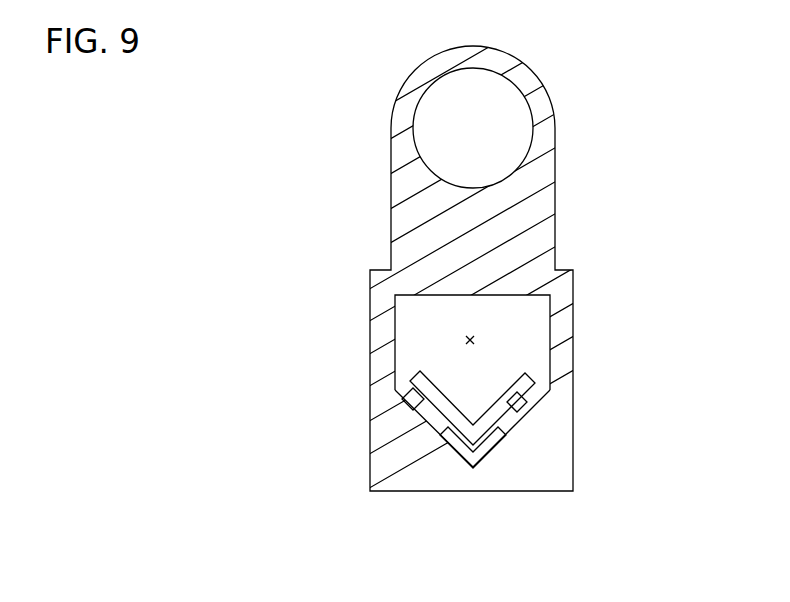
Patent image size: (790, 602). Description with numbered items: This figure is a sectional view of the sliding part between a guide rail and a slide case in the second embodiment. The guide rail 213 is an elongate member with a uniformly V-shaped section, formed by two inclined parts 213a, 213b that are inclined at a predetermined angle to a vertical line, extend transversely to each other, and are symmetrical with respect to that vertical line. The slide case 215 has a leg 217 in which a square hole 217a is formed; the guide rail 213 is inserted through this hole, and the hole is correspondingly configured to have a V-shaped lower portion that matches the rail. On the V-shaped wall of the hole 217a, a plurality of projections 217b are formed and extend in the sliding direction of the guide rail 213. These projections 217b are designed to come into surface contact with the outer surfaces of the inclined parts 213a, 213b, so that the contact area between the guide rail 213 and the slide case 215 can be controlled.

The slide case 215 is at (553, 163).
The leg 217 is at (470, 492).
The square hole 217a is at (464, 338).
The projections 217b is at (438, 424).
The guide rail 213 is at (535, 377).
The inclined part 213a is at (518, 403).
The inclined part 213b is at (405, 398).